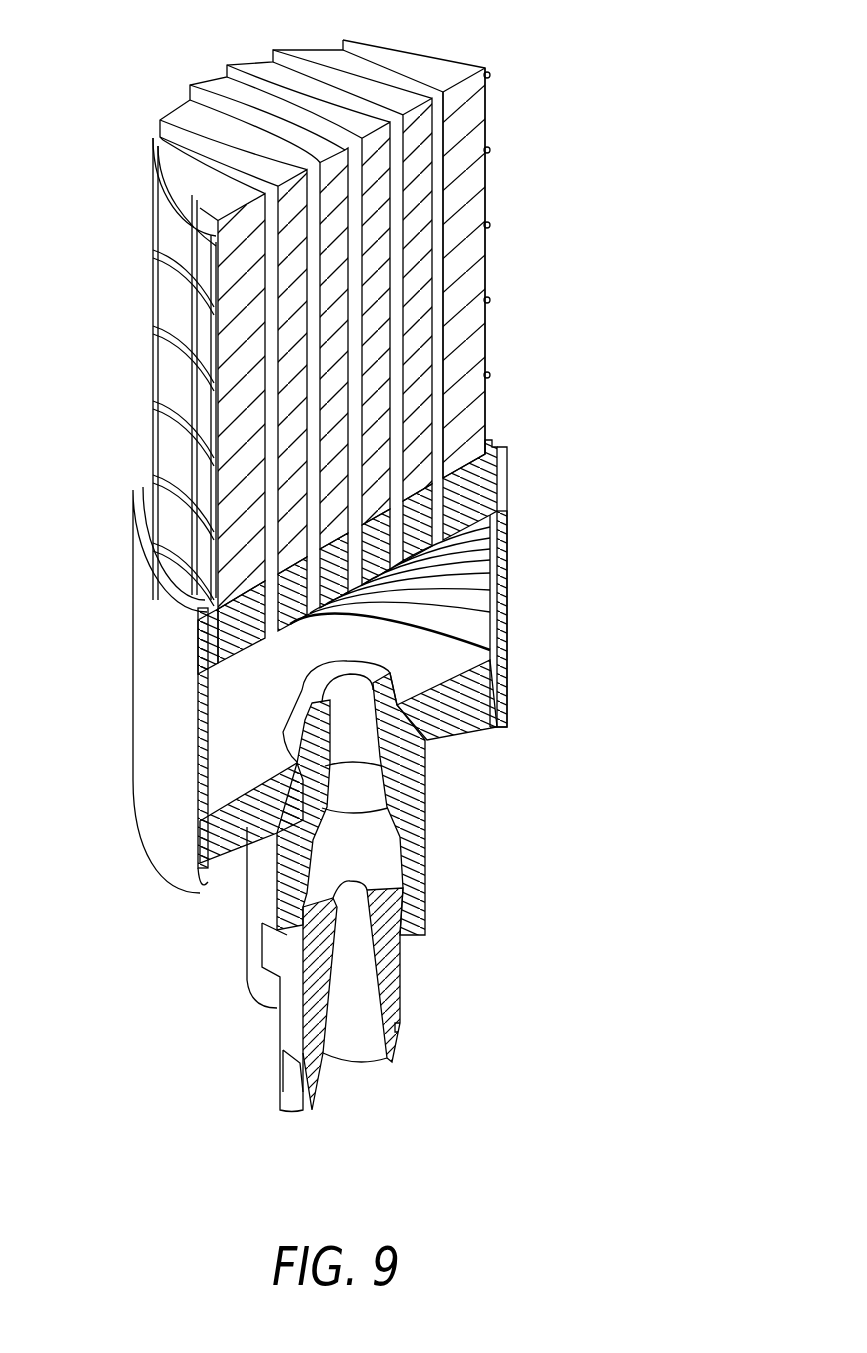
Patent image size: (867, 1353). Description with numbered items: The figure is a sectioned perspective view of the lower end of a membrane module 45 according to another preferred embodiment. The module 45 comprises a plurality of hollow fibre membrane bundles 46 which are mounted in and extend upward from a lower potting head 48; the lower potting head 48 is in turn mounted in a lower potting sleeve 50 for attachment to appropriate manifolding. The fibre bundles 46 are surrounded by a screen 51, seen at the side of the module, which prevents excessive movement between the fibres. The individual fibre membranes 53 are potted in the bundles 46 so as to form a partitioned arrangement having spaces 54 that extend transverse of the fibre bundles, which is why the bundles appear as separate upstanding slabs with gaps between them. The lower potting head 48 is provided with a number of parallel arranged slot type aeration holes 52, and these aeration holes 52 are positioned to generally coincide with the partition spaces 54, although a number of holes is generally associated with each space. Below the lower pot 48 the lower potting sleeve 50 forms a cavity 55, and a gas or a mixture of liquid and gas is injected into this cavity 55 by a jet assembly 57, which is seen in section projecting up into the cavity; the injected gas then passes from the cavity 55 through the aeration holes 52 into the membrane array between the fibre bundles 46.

The module 45 is at (588, 373).
The hollow fibre membrane bundles 46 is at (460, 285).
The lower potting head 48 is at (207, 648).
The lower potting sleeve 50 is at (505, 500).
The screen 51 is at (153, 438).
The aeration holes 52 is at (500, 553).
The fibre membranes 53 is at (413, 58).
The spaces 54 is at (421, 180).
The cavity 55 is at (237, 853).
The jet assembly 57 is at (412, 840).